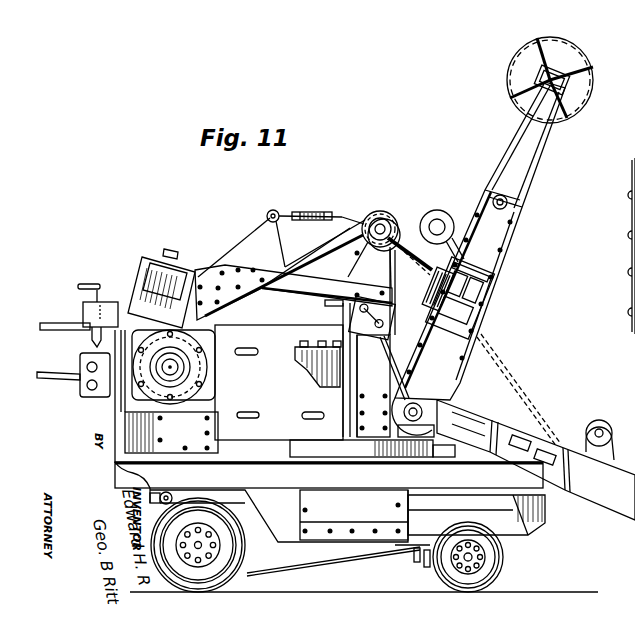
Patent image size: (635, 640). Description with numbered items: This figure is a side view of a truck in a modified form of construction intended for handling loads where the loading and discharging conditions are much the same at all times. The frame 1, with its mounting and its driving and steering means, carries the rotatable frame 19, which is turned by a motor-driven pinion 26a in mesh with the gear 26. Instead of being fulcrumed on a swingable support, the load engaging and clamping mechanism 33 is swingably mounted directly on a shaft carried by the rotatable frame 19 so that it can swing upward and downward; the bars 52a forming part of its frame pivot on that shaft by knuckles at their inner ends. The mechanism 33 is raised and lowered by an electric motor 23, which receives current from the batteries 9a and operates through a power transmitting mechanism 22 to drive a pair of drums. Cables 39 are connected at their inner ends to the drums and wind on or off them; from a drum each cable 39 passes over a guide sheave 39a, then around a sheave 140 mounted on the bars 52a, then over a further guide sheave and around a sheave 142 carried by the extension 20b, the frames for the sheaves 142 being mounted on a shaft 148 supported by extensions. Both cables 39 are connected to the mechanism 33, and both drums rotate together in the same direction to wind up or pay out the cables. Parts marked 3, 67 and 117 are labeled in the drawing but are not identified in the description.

The reel and carriage 3 is at (563, 44).
The load engaging and clamping mechanism 33 is at (515, 317).
The bars 52a is at (443, 398).
The pulley 67 is at (455, 209).
The sheave 140 is at (413, 236).
The cables 39 is at (372, 213).
The guide sheave 39a is at (392, 218).
The sheave 142 is at (336, 211).
The shaft 148 is at (277, 211).
The extension 20b is at (250, 233).
The electric motor 23 is at (142, 276).
The power transmitting mechanism 22 is at (171, 351).
The control valve 117 is at (86, 308).
The batteries 9a is at (312, 371).
The rotatable frame 19 is at (257, 453).
The pinion 26a is at (340, 457).
The gear 26 is at (432, 458).
The frame 1 is at (356, 527).